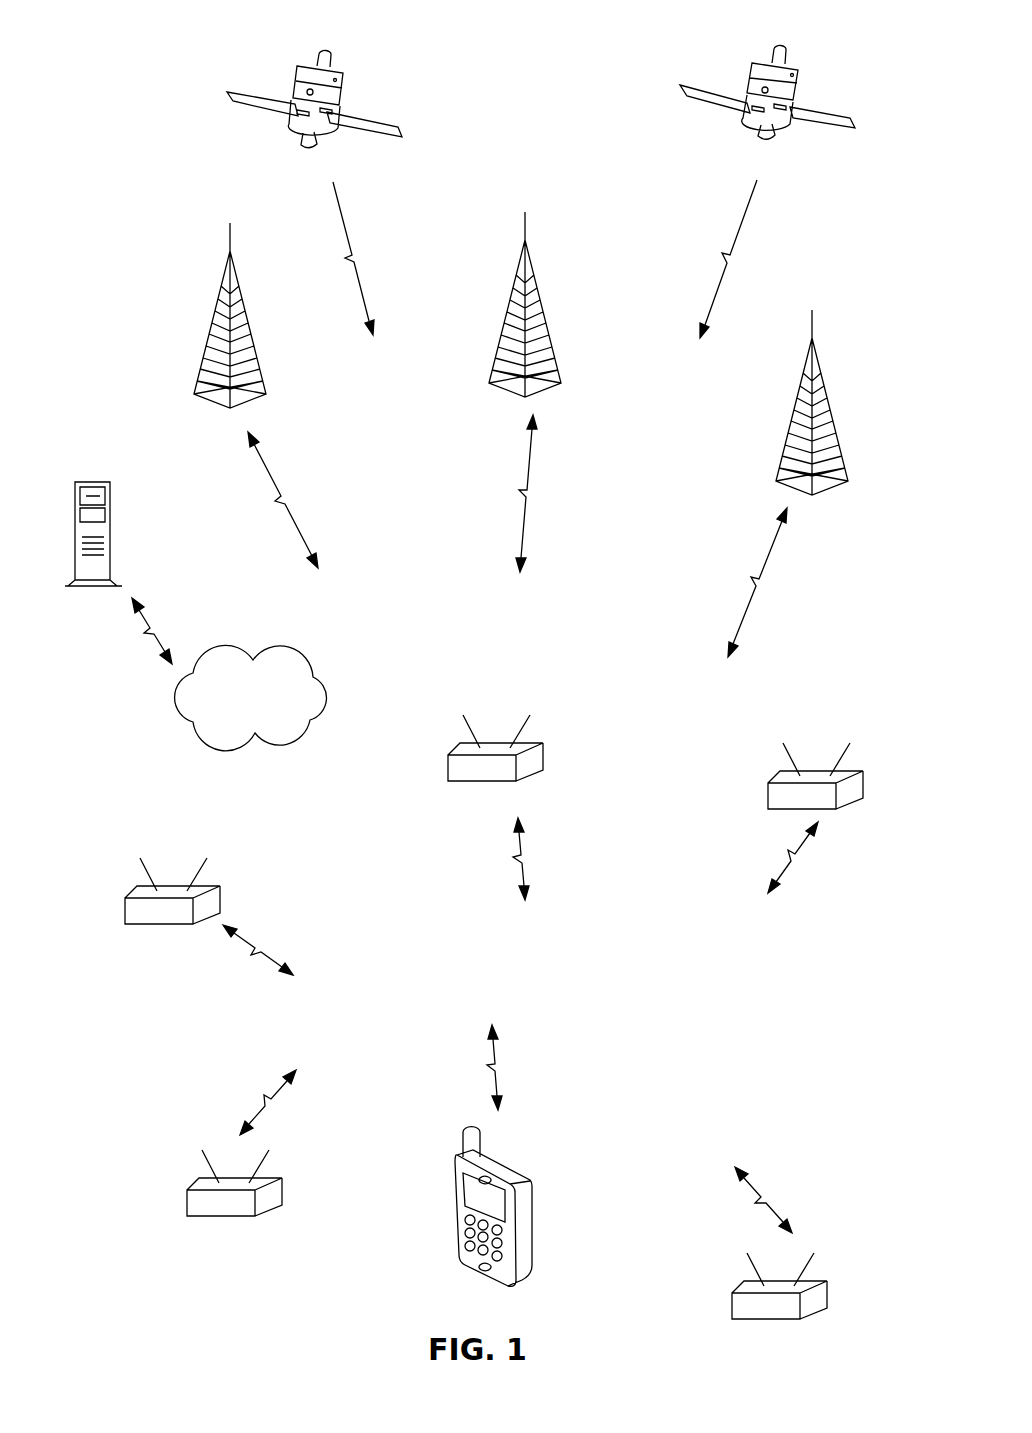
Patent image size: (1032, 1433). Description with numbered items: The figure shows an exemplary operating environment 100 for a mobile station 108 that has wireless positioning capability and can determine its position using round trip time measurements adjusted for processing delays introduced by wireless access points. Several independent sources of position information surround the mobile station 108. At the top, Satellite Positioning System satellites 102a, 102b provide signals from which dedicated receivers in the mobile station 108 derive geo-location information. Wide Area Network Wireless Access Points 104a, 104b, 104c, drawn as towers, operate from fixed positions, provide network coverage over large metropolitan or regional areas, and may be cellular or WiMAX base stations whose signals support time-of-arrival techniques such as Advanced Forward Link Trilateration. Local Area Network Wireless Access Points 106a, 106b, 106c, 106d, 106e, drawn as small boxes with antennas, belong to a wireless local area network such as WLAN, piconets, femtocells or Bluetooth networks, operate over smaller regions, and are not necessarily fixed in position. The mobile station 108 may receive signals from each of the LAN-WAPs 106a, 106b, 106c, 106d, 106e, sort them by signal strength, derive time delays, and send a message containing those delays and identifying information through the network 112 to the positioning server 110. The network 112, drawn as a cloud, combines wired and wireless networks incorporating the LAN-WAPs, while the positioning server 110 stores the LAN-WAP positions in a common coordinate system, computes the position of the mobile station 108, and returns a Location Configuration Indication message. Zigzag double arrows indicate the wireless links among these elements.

The operating environment 100 is at (153, 65).
The SPS satellite 102a is at (325, 56).
The SPS satellite 102b is at (775, 50).
The WAN-WAP 104a is at (228, 226).
The WAN-WAP 104b is at (526, 216).
The WAN-WAP 104c is at (813, 314).
The LAN-WAP 106a is at (220, 886).
The LAN-WAP 106b is at (543, 745).
The LAN-WAP 106c is at (768, 785).
The LAN-WAP 106d is at (282, 1180).
The LAN-WAP 106e is at (732, 1295).
The mobile station 108 is at (530, 1184).
The positioning server 110 is at (90, 482).
The network 112 is at (278, 656).